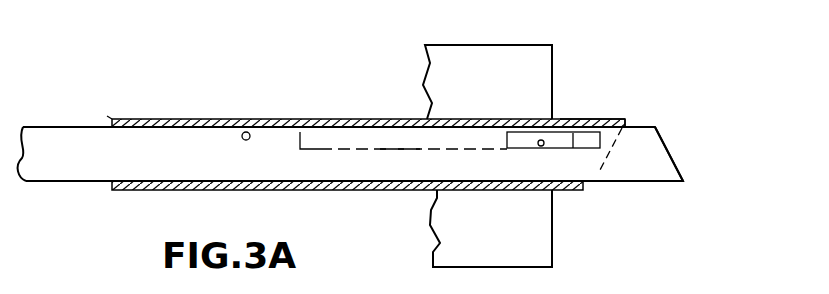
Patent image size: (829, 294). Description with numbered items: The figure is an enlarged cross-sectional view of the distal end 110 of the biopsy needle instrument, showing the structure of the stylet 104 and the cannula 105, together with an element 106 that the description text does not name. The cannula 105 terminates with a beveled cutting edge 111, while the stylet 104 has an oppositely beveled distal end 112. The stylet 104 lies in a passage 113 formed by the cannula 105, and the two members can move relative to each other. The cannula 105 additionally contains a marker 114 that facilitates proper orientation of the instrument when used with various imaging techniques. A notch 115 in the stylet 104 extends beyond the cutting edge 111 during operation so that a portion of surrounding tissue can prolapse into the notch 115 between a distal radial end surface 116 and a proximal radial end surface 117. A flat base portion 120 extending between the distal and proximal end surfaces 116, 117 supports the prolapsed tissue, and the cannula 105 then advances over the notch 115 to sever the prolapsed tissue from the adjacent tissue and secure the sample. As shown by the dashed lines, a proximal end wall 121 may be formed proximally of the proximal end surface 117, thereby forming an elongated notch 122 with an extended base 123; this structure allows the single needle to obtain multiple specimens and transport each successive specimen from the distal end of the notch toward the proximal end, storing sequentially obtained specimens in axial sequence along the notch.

The stylet 104 is at (88, 182).
The cannula 105 is at (170, 118).
The upper clamp block 106 is at (430, 63).
The distal end 110 is at (590, 98).
The beveled cutting edge 111 is at (623, 122).
The oppositely beveled distal end 112 is at (675, 162).
The passage 113 is at (245, 132).
The marker 114 is at (410, 193).
The notch 115 is at (575, 143).
The distal radial end surface 116 is at (596, 150).
The proximal radial end surface 117 is at (510, 135).
The flat base portion 120 is at (540, 146).
The proximal end wall 121 is at (313, 133).
The elongated notch 122 is at (339, 145).
The extended base 123 is at (397, 148).